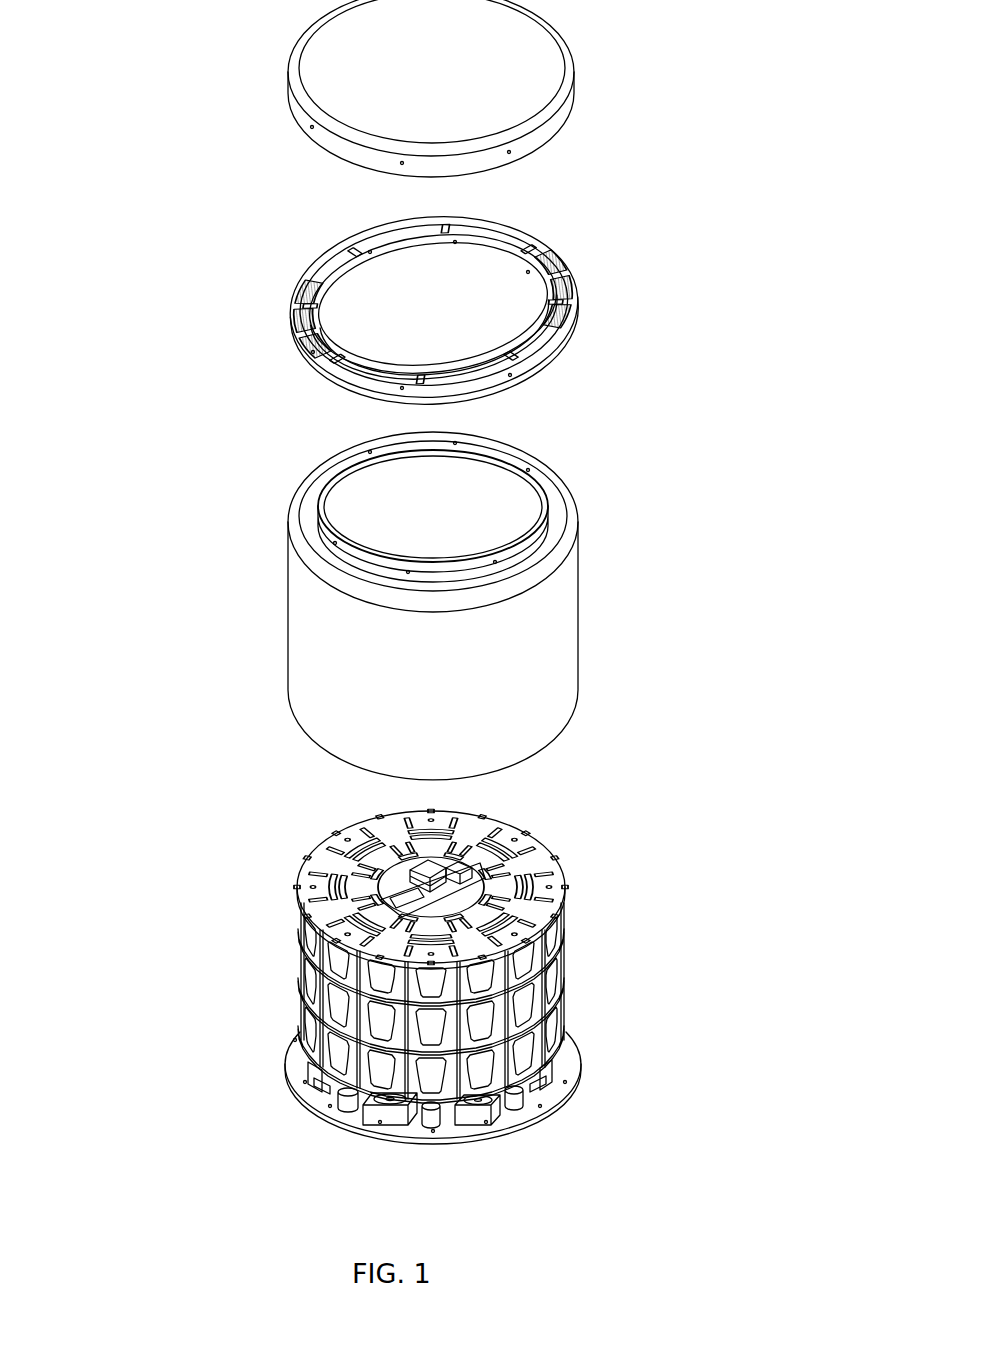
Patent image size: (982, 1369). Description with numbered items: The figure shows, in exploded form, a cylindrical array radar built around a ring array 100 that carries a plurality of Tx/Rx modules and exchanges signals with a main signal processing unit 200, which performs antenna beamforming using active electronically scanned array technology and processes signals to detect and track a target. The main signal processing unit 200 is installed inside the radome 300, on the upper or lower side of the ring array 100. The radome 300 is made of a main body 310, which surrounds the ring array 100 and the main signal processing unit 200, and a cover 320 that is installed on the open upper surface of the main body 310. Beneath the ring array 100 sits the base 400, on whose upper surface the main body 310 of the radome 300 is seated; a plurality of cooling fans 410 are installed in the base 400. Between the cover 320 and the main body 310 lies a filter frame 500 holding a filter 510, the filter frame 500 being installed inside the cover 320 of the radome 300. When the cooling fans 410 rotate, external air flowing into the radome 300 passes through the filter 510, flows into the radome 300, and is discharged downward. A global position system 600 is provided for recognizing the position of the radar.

The ring array 100 is at (266, 972).
The main signal processing unit 200 is at (478, 886).
The radome 300 is at (130, 305).
The main body 310 is at (302, 612).
The cover 320 is at (297, 115).
The base 400 is at (429, 1129).
The cooling fan 410 is at (474, 1122).
The filter frame 500 is at (504, 310).
The filter 510 is at (558, 298).
The global position system (GPS) 600 is at (412, 861).